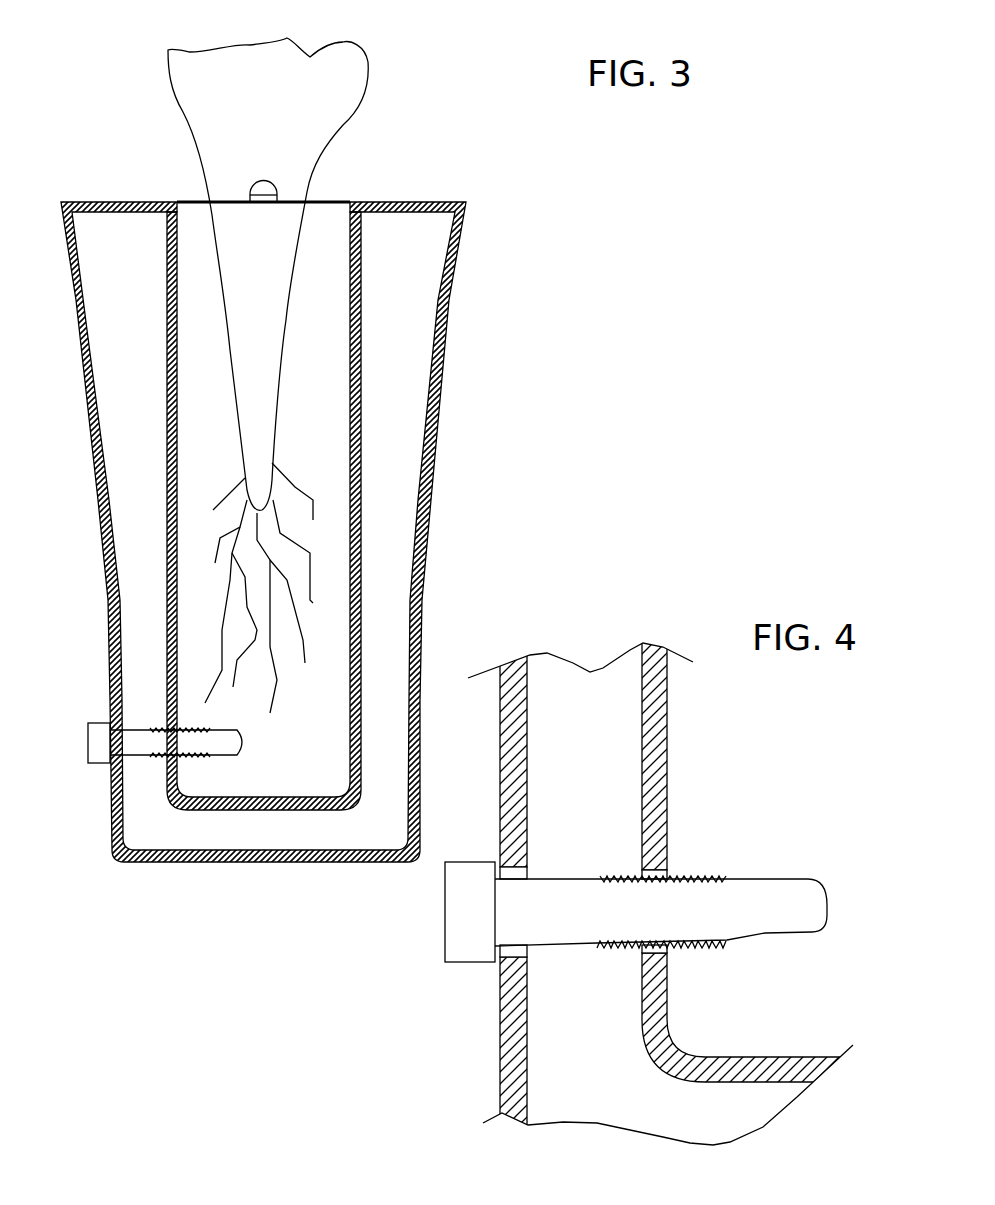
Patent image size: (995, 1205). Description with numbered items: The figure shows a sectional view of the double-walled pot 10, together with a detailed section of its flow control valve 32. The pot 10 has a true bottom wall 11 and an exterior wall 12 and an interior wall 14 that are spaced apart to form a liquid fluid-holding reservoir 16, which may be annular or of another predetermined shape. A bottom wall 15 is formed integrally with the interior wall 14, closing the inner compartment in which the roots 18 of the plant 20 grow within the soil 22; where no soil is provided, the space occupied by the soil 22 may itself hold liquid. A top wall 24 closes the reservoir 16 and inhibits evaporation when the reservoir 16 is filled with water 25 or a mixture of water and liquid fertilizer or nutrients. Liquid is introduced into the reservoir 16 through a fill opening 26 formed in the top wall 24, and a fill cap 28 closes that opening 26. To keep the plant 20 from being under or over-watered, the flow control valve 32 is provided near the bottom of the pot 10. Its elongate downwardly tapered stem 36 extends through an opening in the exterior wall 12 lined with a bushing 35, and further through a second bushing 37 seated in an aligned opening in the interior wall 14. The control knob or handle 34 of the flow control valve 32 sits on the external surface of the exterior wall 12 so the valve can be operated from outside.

In FIG. 3, the pot 10 is at (445, 149).
In FIG. 3, the true bottom wall 11 is at (240, 863).
In FIG. 3, the exterior wall 12 is at (428, 505).
In FIG. 4, the exterior wall 12 is at (500, 763).
In FIG. 3, the interior wall 14 is at (362, 245).
In FIG. 4, the interior wall 14 is at (667, 727).
In FIG. 3, the bottom wall 15 is at (232, 810).
In FIG. 4, the bottom wall 15 is at (748, 1082).
In FIG. 3, the liquid fluid-holding reservoir 16 is at (142, 276).
In FIG. 4, the liquid fluid-holding reservoir 16 is at (600, 741).
In FIG. 3, the roots 18 is at (280, 480).
In FIG. 3, the plant 20 is at (313, 167).
In FIG. 3, the soil 22 is at (330, 732).
In FIG. 3, the top wall 24 is at (137, 202).
In FIG. 3, the water 25 is at (130, 443).
In FIG. 3, the fill opening 26 is at (253, 190).
In FIG. 3, the fill cap 28 is at (262, 183).
In FIG. 3, the flow control valve 32 is at (137, 757).
In FIG. 4, the flow control valve 32 is at (583, 899).
In FIG. 3, the control knob or handle 34 is at (93, 745).
In FIG. 4, the control knob or handle 34 is at (450, 942).
In FIG. 4, the bushing 35 is at (518, 872).
In FIG. 3, the elongate downwardly tapered stem 36 is at (150, 760).
In FIG. 4, the elongate downwardly tapered stem 36 is at (661, 874).
In FIG. 4, the bushing 37 is at (652, 880).